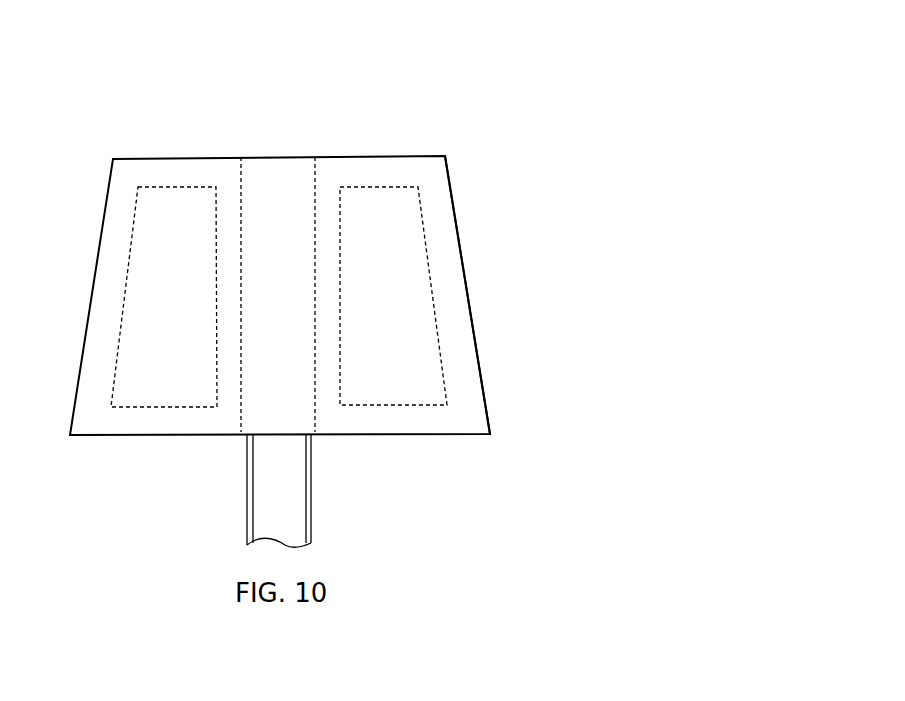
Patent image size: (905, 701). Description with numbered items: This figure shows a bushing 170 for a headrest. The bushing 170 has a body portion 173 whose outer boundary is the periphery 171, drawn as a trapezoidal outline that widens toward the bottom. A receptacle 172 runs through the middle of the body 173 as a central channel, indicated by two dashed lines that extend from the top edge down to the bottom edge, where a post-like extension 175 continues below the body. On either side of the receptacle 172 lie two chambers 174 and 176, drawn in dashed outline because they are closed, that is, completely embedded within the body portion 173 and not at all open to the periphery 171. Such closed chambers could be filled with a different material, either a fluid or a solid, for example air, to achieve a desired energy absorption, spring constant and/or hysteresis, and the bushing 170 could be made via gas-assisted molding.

The bushing 170 is at (465, 112).
The periphery 171 is at (467, 285).
The receptacle 172 is at (316, 165).
The body portion 173 is at (466, 377).
The chamber 174 is at (403, 388).
The chamber 176 is at (166, 390).
The stem 175 is at (279, 491).